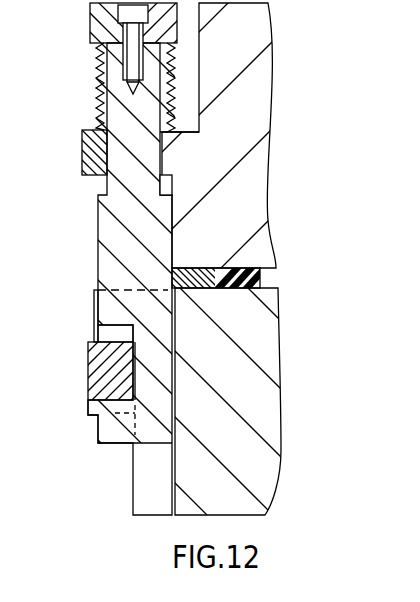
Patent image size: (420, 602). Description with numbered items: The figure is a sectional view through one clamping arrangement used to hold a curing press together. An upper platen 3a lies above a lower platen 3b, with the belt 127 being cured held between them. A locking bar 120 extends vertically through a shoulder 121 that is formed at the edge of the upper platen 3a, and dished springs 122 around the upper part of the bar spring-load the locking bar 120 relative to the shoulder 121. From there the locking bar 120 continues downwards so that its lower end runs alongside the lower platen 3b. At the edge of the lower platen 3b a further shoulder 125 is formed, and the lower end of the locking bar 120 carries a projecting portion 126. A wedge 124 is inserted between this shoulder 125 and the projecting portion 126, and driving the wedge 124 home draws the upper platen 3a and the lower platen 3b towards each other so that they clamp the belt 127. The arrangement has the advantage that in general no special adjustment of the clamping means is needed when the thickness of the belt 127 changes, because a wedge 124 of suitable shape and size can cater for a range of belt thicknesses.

The upper platen 3a is at (268, 74).
The lower platen 3b is at (273, 385).
The locking bar 120 is at (98, 237).
The shoulder 121 is at (93, 170).
The dished spring 122 is at (97, 65).
The wedge 124 is at (93, 378).
The shoulder 125 is at (100, 334).
The projecting portion 126 is at (100, 429).
The belt 127 is at (260, 277).